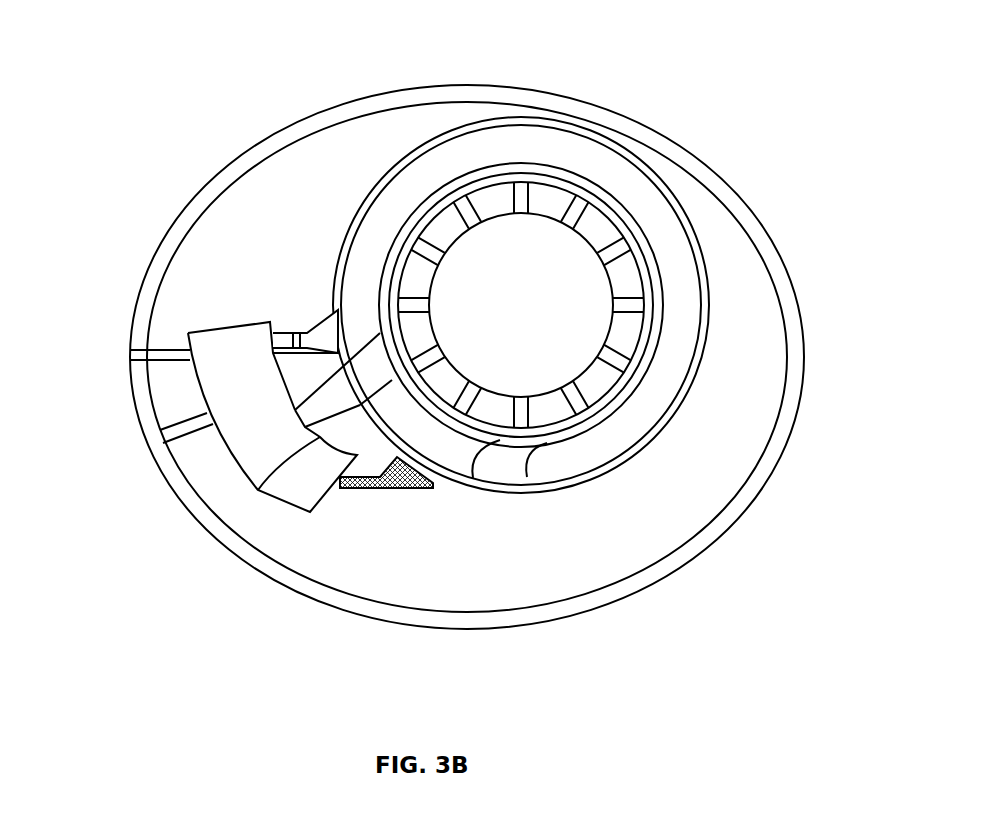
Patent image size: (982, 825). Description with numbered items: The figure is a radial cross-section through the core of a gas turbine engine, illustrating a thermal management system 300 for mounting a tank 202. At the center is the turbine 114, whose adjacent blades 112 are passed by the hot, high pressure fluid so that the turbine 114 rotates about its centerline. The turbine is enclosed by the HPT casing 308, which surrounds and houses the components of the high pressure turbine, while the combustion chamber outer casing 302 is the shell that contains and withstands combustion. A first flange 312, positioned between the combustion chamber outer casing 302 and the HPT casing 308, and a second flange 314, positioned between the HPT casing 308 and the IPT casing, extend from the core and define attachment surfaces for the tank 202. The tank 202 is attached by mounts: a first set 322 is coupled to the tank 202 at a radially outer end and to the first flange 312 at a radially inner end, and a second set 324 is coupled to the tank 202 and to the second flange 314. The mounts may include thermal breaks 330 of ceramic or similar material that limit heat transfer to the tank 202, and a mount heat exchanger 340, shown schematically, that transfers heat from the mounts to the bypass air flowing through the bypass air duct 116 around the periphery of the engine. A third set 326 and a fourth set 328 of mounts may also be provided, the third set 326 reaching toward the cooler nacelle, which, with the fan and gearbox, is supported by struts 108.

The struts 108 is at (133, 288).
The bypass air duct 116 is at (187, 488).
The HPT casing 308 is at (402, 170).
The turbine 114 is at (704, 378).
The second flange 314 is at (367, 207).
The blades 112 is at (640, 333).
The tank 202 is at (201, 331).
The first set of mounts 322 is at (259, 489).
The third set of mounts 326 is at (158, 370).
The fourth set of mounts 328 is at (170, 443).
The second set of mounts 324 is at (282, 335).
The thermal breaks 330 is at (392, 380).
The mount heat exchanger 340 is at (396, 487).
The first flange 312 is at (473, 478).
The combustion chamber outer casing 302 is at (527, 477).
The thermal management system 300 is at (307, 540).